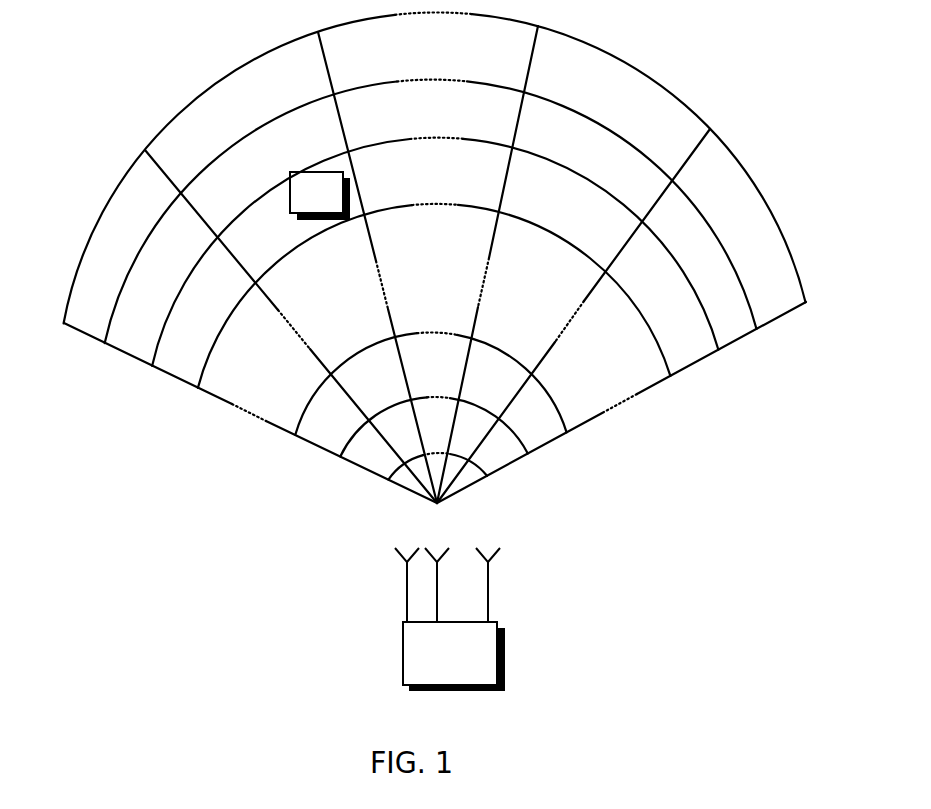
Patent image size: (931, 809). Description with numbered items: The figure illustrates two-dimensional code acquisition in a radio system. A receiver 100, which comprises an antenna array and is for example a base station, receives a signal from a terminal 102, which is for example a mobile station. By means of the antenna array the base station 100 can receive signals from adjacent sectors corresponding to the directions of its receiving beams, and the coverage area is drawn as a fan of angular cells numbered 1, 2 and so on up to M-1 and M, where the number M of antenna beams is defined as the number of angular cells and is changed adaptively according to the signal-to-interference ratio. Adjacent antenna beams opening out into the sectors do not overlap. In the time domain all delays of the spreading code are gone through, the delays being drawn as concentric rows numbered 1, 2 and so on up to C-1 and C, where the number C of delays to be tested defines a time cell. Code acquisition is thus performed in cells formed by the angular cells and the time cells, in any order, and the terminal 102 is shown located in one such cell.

The receiver 100 is at (402, 635).
The terminal 102 is at (333, 172).
The first beam / first row 1 is at (275, 366).
The second beam / second row 2 is at (336, 276).
The (M-1)th beam M-1 is at (559, 264).
The number of antenna beams M is at (621, 316).
The (C-1)th row (cell ring) C-1 is at (436, 227).
The number of delays to be tested C is at (435, 182).